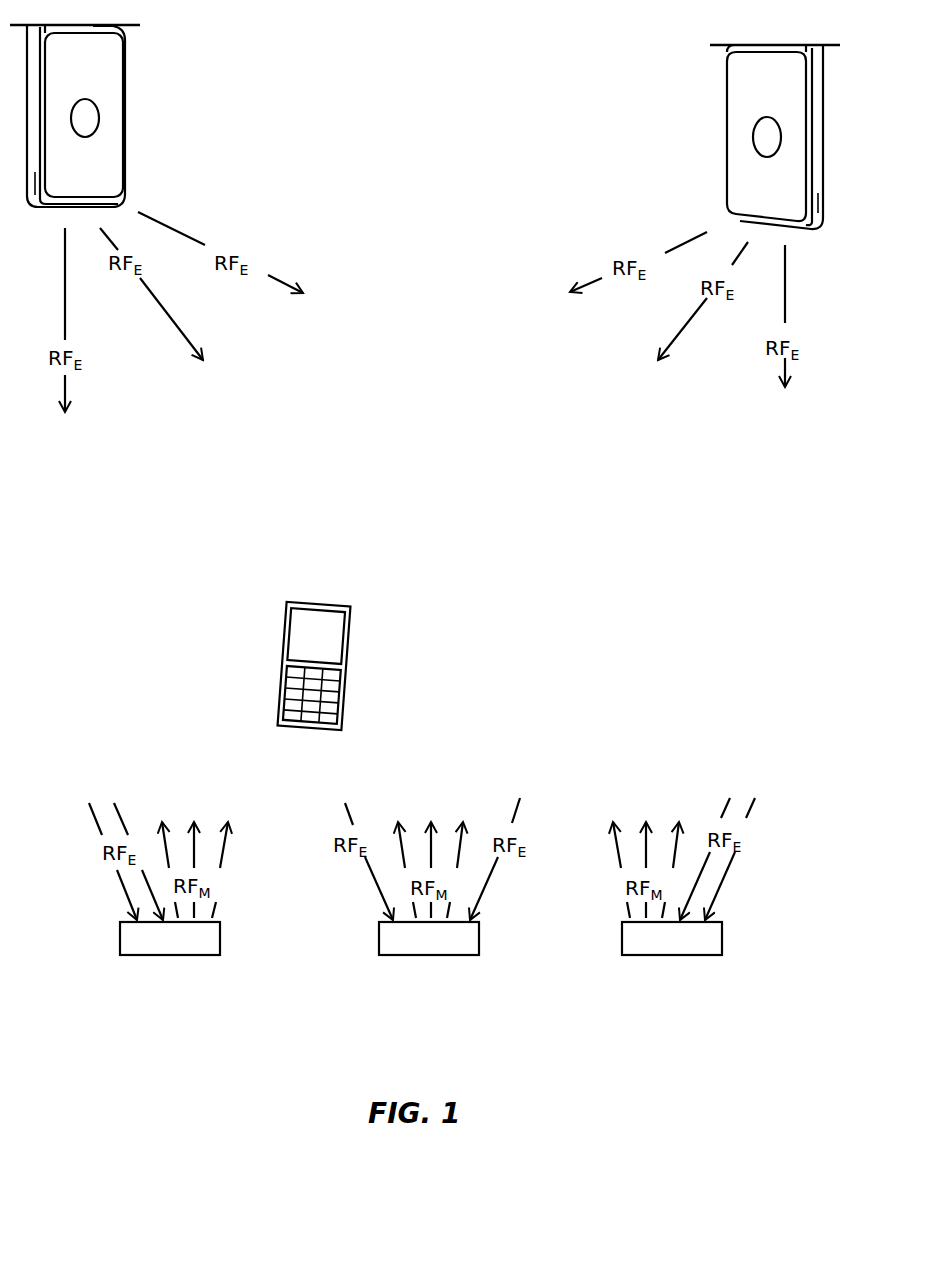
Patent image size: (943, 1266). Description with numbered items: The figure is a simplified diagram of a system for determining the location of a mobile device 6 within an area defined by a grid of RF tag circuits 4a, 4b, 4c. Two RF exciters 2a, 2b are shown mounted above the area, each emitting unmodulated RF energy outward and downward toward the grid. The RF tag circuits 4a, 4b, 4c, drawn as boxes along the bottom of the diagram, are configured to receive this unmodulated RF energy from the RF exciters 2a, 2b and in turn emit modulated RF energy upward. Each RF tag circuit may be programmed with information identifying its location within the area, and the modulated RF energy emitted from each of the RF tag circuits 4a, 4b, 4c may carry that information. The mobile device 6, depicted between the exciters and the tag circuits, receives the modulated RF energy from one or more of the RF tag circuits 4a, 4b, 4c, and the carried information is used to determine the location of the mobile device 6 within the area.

The RF exciter 2a is at (125, 102).
The RF exciter 2b is at (725, 130).
The mobile device 6 is at (352, 622).
The RF tag circuit 4a is at (120, 955).
The RF tag circuit 4b is at (379, 955).
The RF tag circuit 4c is at (622, 955).